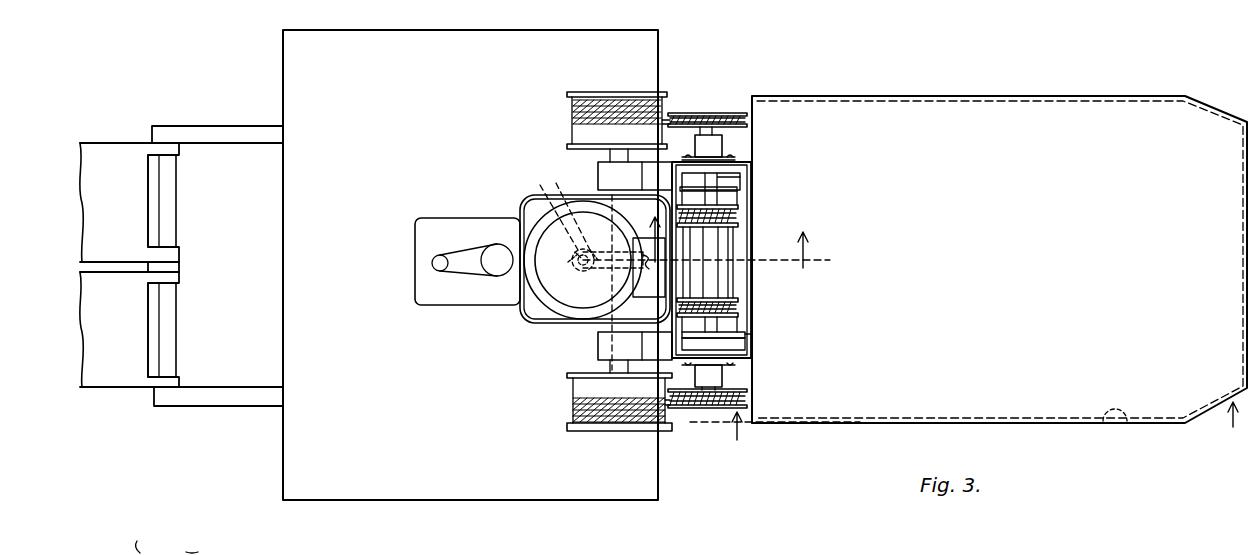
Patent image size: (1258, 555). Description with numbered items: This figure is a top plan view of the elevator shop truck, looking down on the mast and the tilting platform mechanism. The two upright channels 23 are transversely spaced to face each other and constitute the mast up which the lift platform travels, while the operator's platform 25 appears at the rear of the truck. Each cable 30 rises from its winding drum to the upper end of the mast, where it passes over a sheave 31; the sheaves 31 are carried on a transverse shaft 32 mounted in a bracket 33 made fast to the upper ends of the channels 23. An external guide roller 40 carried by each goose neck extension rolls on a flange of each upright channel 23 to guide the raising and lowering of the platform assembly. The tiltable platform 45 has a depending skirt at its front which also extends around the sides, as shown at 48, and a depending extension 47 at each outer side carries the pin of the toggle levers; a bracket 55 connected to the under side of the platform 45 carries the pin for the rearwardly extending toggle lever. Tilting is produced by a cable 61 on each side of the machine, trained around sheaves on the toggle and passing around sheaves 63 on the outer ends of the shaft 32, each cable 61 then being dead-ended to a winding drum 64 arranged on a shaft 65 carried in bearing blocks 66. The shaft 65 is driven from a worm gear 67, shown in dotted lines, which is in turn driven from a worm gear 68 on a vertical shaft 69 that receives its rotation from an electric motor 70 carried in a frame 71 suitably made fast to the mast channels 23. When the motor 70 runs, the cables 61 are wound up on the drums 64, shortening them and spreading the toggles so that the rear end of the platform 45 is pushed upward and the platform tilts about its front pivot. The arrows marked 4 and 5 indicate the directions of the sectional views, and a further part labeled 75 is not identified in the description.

The section line 4- 4 is at (660, 296).
The section line 5- 5 is at (964, 431).
The upright channels 23 is at (752, 338).
The operator's platform 25 is at (136, 392).
The cable 30 is at (738, 214).
The sheave 31 is at (735, 202).
The transverse shaft 32 is at (710, 178).
The bracket 33 is at (718, 377).
The external guide roller 40 is at (752, 350).
The platform 45 is at (835, 405).
The depending extension 47 is at (1247, 306).
The skirt side portion 48 is at (1120, 422).
The bracket 55 is at (712, 143).
The cable 61 is at (572, 122).
The sheaves 63 is at (740, 113).
The winding drum 64 is at (575, 385).
The shaft 65 is at (618, 367).
The bearing blocks 66 is at (612, 345).
The worm gear 67 is at (578, 196).
The worm gear 68 is at (548, 196).
The vertical shaft 69 is at (585, 250).
The electric motor 70 is at (528, 205).
The frame 71 is at (530, 321).
The motor bracket 75 is at (440, 258).